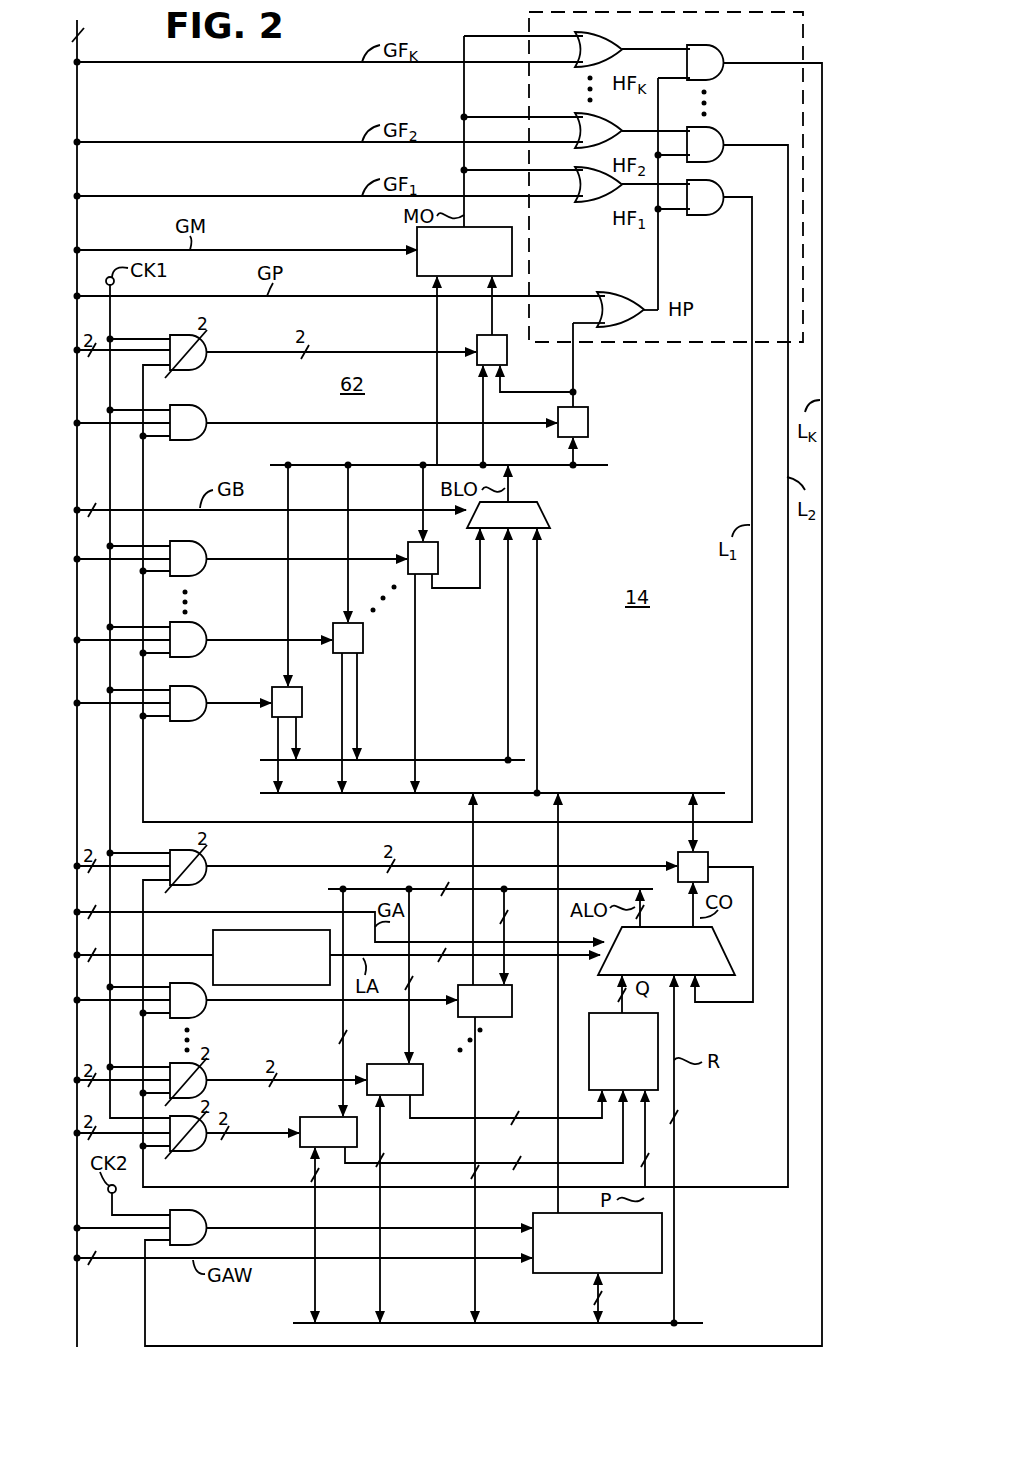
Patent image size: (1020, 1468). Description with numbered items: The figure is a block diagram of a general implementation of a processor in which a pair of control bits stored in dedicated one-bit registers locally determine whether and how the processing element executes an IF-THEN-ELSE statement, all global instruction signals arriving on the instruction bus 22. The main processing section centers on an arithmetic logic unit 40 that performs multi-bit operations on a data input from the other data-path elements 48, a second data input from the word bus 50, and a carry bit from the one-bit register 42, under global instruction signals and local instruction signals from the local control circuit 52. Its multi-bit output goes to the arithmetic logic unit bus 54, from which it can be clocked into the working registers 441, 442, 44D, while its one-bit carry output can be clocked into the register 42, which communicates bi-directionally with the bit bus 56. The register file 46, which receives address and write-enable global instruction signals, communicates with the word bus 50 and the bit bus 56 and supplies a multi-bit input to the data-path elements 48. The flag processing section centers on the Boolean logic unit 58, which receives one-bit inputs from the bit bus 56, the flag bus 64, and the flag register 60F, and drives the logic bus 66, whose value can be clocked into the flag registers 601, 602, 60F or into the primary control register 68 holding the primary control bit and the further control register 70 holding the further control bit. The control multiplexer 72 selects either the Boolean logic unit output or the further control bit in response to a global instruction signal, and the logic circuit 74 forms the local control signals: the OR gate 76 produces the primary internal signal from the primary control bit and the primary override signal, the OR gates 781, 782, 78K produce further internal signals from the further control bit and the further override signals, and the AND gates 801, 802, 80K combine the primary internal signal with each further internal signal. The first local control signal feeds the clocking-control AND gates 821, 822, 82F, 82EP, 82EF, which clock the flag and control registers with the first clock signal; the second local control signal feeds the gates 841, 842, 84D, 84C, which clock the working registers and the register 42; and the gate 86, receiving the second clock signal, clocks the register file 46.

The IBUS 22 is at (77, 100).
The OR gate 78K is at (612, 36).
The OR gate 782 is at (580, 110).
The OR gate 781 is at (583, 203).
The AND gate 80K is at (716, 80).
The AND gate 802 is at (716, 162).
The AND gate 801 is at (700, 215).
The control multiplexer 72 is at (417, 266).
The OR gate 76 is at (605, 292).
The logic circuit 74 is at (682, 343).
The further one-bit control register 70 is at (477, 338).
The primary one-bit control register 68 is at (590, 415).
The LBUS 66 is at (550, 467).
The Boolean logic unit 58 is at (550, 512).
The one-bit flag register 60F is at (412, 540).
The one-bit flag register 602 is at (364, 648).
The one-bit flag register 601 is at (268, 718).
The clocking-control AND gate 82EF is at (192, 372).
The clocking-control AND gate 82EP is at (185, 442).
The clocking-control AND gate 82F is at (194, 542).
The clocking-control AND gate 822 is at (194, 625).
The clocking-control AND gate 821 is at (185, 722).
The FBUS 64 is at (465, 744).
The BBUS 56 is at (635, 793).
The clocking-control AND gate 84C is at (193, 884).
The ABUS 54 is at (340, 887).
The local control circuit 52 is at (213, 945).
The one-bit register 42 is at (706, 850).
The arithmetic logic unit 40 is at (684, 977).
The other data-path elements 48 is at (600, 1012).
The clocking-control AND gate 84D is at (193, 1017).
The clocking-control AND gate 842 is at (208, 1085).
The clocking-control AND gate 841 is at (190, 1152).
The multi-bit working register 44D is at (495, 1153).
The multi-bit working register 442 is at (424, 1082).
The multi-bit working register 441 is at (300, 1150).
The clocking-control AND gate 86 is at (203, 1212).
The multi-bit register file 46 is at (537, 1212).
The WBUS 50 is at (703, 1323).